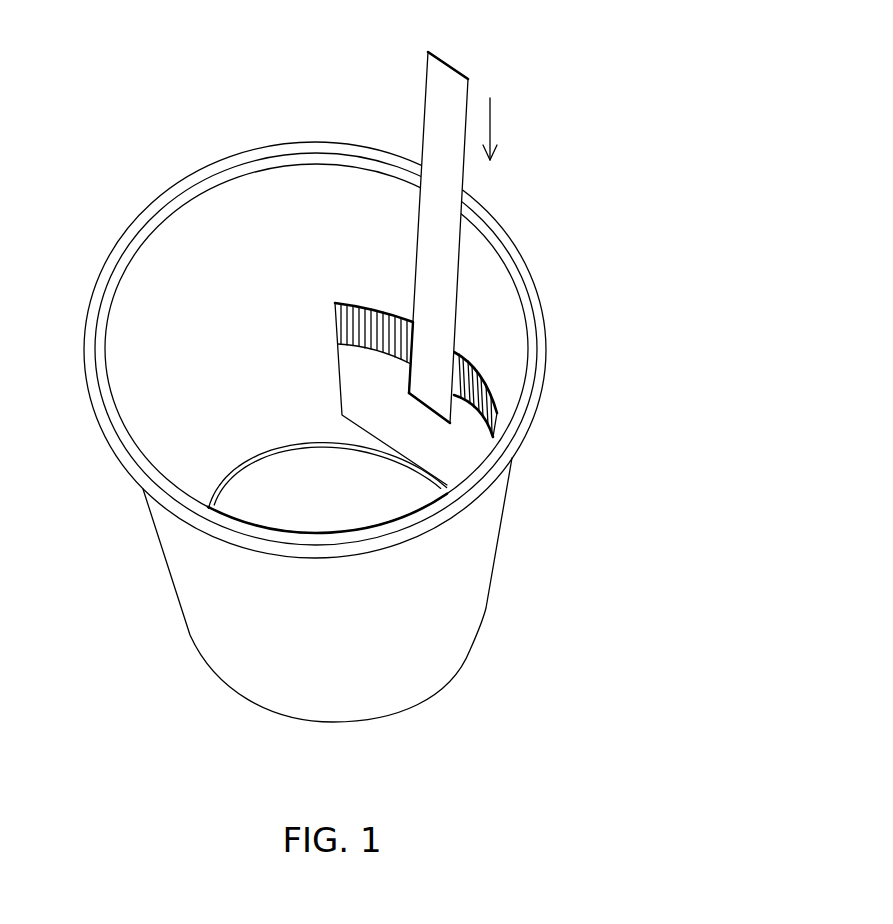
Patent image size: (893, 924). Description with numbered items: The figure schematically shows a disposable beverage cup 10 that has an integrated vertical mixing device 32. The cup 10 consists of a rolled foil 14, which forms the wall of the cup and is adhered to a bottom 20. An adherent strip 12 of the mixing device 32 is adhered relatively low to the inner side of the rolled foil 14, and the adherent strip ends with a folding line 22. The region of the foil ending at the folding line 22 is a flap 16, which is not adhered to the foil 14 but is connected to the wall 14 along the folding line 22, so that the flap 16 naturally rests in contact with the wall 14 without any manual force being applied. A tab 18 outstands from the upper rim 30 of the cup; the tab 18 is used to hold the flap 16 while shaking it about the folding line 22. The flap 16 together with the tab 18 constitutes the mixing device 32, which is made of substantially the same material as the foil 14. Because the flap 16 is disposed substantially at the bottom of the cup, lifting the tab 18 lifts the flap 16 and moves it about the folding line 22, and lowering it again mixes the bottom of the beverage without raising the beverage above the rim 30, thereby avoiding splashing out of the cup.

The disposable beverage cup 10 is at (96, 127).
The adherent strip 12 is at (367, 317).
The rolled foil 14 is at (273, 653).
The flap 16 is at (467, 443).
The tab 18 is at (452, 83).
The bottom 20 is at (303, 508).
The folding line 22 is at (383, 345).
The upper rim 30 is at (205, 167).
The mixing device 32 is at (279, 192).